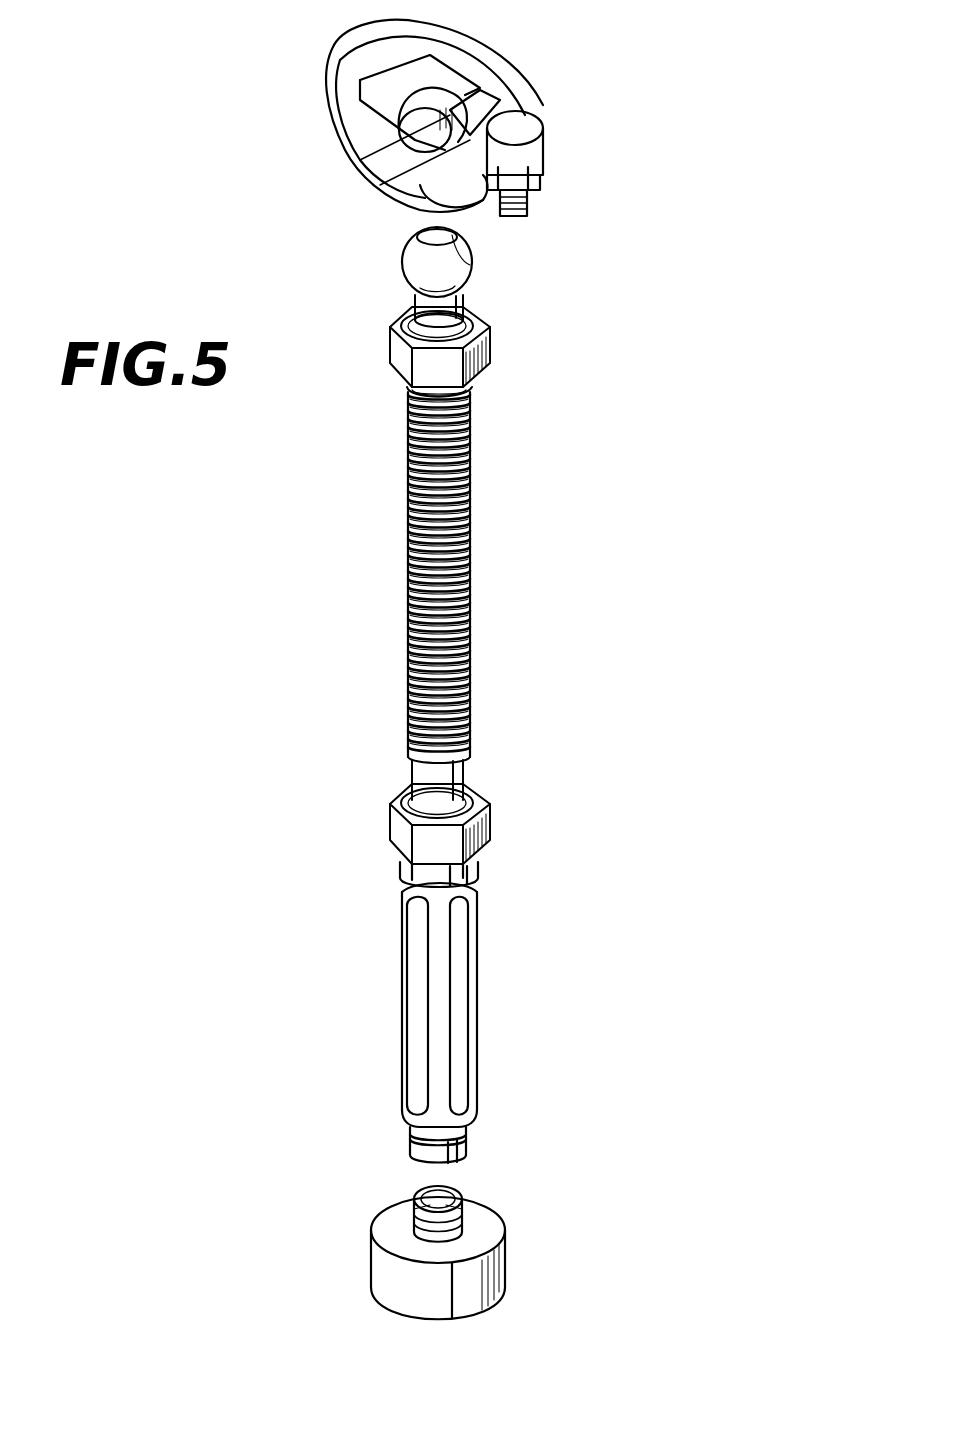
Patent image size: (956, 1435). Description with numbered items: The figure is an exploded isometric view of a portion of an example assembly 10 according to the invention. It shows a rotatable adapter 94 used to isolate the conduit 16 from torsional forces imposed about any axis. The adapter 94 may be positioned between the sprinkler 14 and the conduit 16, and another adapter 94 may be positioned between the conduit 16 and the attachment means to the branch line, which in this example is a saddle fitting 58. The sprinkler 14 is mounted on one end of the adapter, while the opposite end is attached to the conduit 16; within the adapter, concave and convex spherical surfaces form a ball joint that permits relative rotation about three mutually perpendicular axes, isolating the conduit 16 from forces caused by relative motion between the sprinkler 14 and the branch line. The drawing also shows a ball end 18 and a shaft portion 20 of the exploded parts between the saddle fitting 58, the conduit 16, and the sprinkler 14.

The pipe support assembly 10 is at (544, 580).
The sprinkler 14 is at (374, 1265).
The conduit 16 is at (466, 672).
The ball end 18 is at (417, 330).
The shaft 20 is at (422, 774).
The saddle fitting 58 is at (540, 100).
The rotatable adapter 94 is at (503, 250).